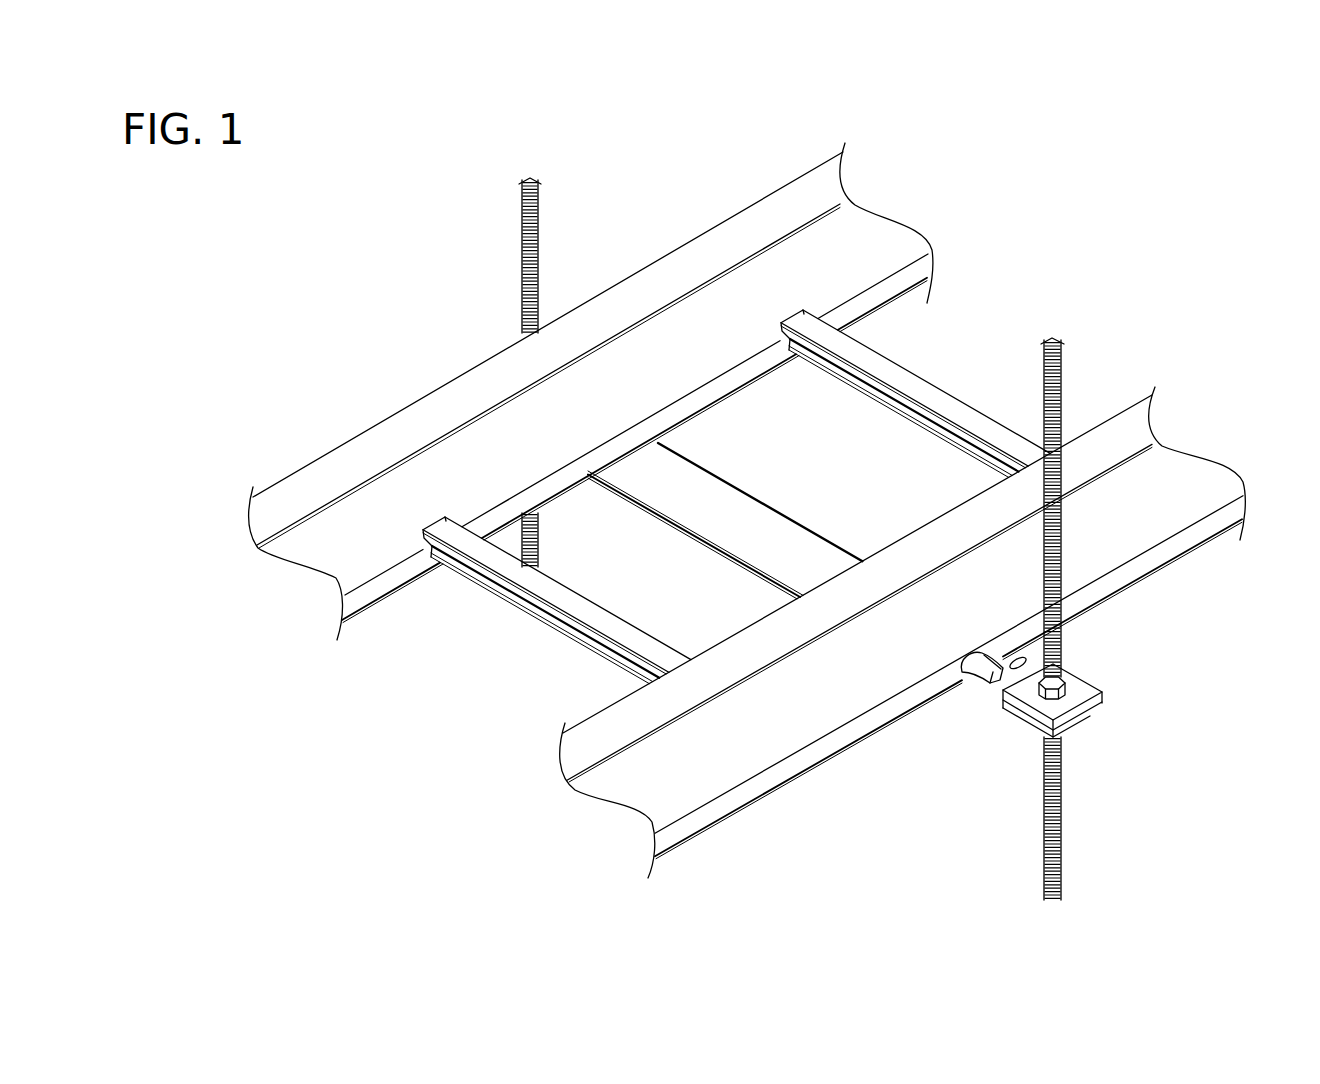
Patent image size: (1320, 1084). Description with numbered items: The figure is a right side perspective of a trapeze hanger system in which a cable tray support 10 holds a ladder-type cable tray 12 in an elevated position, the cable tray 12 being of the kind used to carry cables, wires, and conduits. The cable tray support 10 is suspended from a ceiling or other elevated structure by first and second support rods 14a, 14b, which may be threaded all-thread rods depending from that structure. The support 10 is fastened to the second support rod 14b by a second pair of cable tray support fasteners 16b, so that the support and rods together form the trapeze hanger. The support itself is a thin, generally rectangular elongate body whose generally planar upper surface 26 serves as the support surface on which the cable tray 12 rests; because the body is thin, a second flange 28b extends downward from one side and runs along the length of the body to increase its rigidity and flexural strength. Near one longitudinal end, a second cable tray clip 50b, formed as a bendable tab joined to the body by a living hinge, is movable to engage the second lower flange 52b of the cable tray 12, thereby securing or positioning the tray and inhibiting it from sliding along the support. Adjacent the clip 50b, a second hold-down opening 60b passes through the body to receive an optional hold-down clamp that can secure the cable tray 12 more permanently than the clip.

The cable tray support 10 is at (767, 487).
The cable tray 12 is at (413, 400).
The first support rod 14a is at (527, 243).
The second support rod 14b is at (1056, 377).
The second pair of cable tray support fasteners 16b is at (1082, 668).
The upper surface 26 is at (797, 547).
The second flange 28b is at (670, 523).
The second cable tray clip 50b is at (973, 672).
The second lower flange 52b is at (1157, 560).
The second hold-down opening 60b is at (1018, 667).